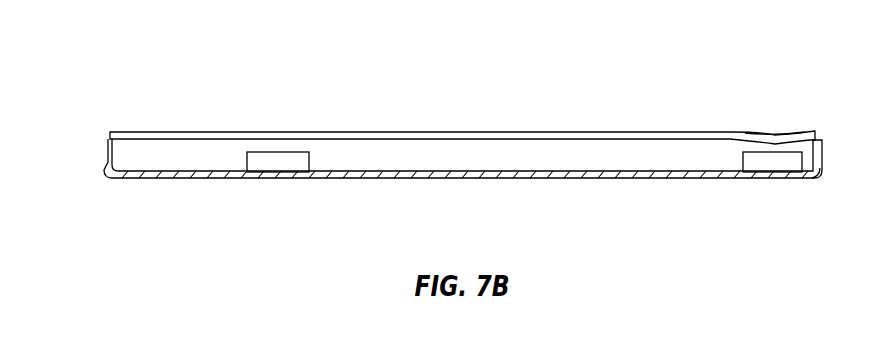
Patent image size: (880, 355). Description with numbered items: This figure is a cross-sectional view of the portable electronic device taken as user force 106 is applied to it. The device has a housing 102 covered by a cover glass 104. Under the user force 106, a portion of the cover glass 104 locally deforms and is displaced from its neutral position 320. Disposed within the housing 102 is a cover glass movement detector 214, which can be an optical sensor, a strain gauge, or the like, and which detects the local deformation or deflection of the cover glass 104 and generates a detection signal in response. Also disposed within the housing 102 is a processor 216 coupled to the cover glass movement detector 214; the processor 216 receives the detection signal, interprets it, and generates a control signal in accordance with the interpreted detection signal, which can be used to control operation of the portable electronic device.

The housing 102 is at (104, 172).
The cover glass 104 is at (256, 137).
The user force 106 is at (773, 120).
The cover glass movement detector 214 is at (766, 162).
The processor 216 is at (278, 163).
The neutral position 320 is at (760, 132).